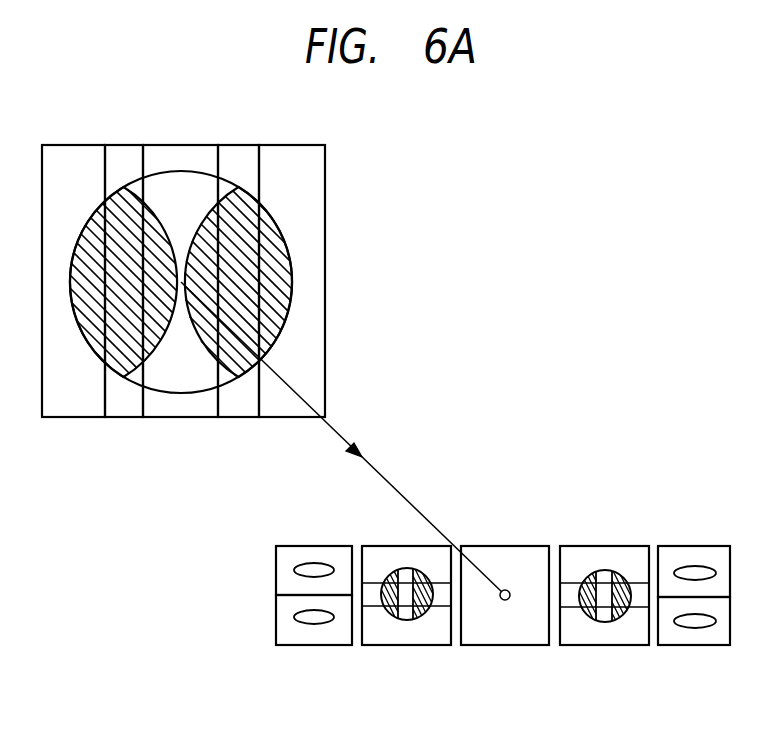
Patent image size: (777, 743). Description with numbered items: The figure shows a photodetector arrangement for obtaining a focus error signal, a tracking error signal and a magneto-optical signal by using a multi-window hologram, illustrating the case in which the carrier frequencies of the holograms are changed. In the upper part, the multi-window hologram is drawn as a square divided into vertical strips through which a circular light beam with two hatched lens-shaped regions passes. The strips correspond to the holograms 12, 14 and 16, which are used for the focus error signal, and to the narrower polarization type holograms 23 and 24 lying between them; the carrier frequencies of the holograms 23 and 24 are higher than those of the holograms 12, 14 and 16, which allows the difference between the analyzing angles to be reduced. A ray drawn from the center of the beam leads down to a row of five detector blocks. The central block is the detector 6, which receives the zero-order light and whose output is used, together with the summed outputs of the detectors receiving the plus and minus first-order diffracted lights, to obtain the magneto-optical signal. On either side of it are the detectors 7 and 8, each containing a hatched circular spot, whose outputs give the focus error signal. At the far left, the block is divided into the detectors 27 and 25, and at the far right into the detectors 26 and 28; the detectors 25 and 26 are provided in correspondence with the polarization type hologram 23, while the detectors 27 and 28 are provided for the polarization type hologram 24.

The hologram 12 is at (78, 156).
The polarization type hologram 23 is at (125, 155).
The hologram 14 is at (190, 152).
The polarization type hologram 24 is at (240, 153).
The hologram 16 is at (294, 153).
The detector 27 is at (276, 570).
The detector 25 is at (276, 627).
The detector 7 is at (362, 655).
The detector 6 is at (507, 647).
The detector 8 is at (560, 655).
The detector 26 is at (688, 548).
The detector 28 is at (703, 646).